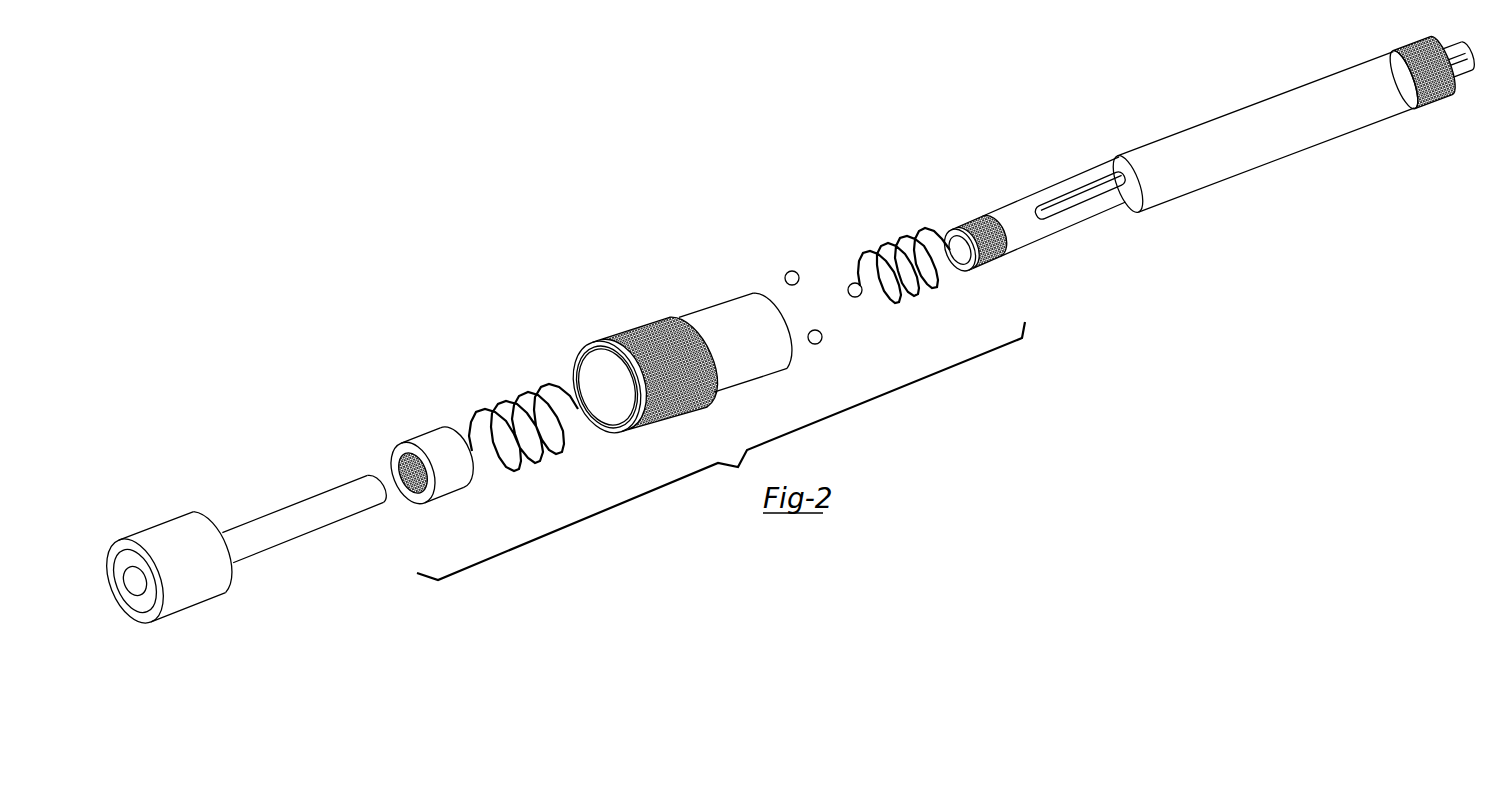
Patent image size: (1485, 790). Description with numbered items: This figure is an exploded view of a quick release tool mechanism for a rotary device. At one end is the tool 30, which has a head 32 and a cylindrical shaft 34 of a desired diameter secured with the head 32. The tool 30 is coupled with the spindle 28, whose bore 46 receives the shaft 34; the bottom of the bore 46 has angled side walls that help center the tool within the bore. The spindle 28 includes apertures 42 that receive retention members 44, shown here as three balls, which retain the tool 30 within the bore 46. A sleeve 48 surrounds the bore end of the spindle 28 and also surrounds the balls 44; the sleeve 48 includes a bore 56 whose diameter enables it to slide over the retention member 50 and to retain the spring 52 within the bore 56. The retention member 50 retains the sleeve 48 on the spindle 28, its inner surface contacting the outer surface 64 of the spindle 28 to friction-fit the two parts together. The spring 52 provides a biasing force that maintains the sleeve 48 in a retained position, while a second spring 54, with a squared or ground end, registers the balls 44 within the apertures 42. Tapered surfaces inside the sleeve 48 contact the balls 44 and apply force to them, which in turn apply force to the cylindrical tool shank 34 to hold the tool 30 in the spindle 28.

The spindle 28 is at (1273, 138).
The tool 30 is at (193, 501).
The head 32 is at (187, 587).
The shaft 34 is at (267, 533).
The apertures 42 is at (1092, 202).
The retention members 44 is at (795, 270).
The bore 46 is at (963, 257).
The sleeve 48 is at (708, 307).
The retention member 50 is at (433, 438).
The spring 52 is at (510, 400).
The spring 54 is at (905, 238).
The bore 56 is at (620, 414).
The outer surface 64 is at (968, 218).